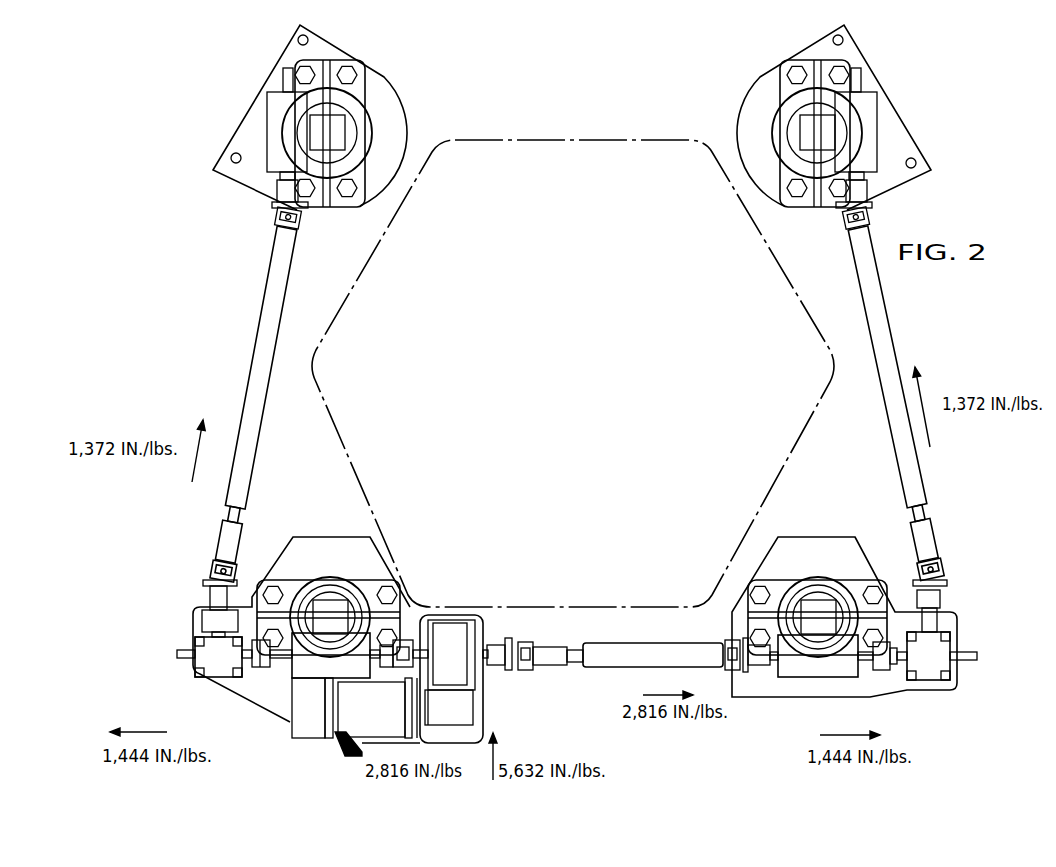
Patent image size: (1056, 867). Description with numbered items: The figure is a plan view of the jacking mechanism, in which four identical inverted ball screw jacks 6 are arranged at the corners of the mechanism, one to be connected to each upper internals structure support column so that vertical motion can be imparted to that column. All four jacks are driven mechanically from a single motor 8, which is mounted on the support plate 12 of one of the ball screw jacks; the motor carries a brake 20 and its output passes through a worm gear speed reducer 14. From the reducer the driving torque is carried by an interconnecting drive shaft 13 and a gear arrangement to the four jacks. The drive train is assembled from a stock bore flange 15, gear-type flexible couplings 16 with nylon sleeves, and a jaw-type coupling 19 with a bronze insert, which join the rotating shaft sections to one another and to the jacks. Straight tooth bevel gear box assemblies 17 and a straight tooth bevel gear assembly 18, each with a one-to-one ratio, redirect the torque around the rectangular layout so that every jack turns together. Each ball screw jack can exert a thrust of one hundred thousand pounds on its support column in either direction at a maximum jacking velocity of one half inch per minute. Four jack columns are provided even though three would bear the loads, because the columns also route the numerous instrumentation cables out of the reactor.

The ball screw jack 6 is at (321, 142).
The motor 8 is at (395, 690).
The support plate 12 is at (388, 99).
The drive shaft 13 is at (284, 307).
The worm gear speed reducer 14 is at (467, 715).
The stock bore flange 15 is at (497, 643).
The gear-type flexible coupling 16 is at (263, 642).
The straight tooth bevel gear box assembly 17 is at (223, 668).
The straight tooth bevel gear assembly 18 is at (215, 620).
The jaw-type coupling 19 is at (413, 640).
The brake 20 is at (313, 732).